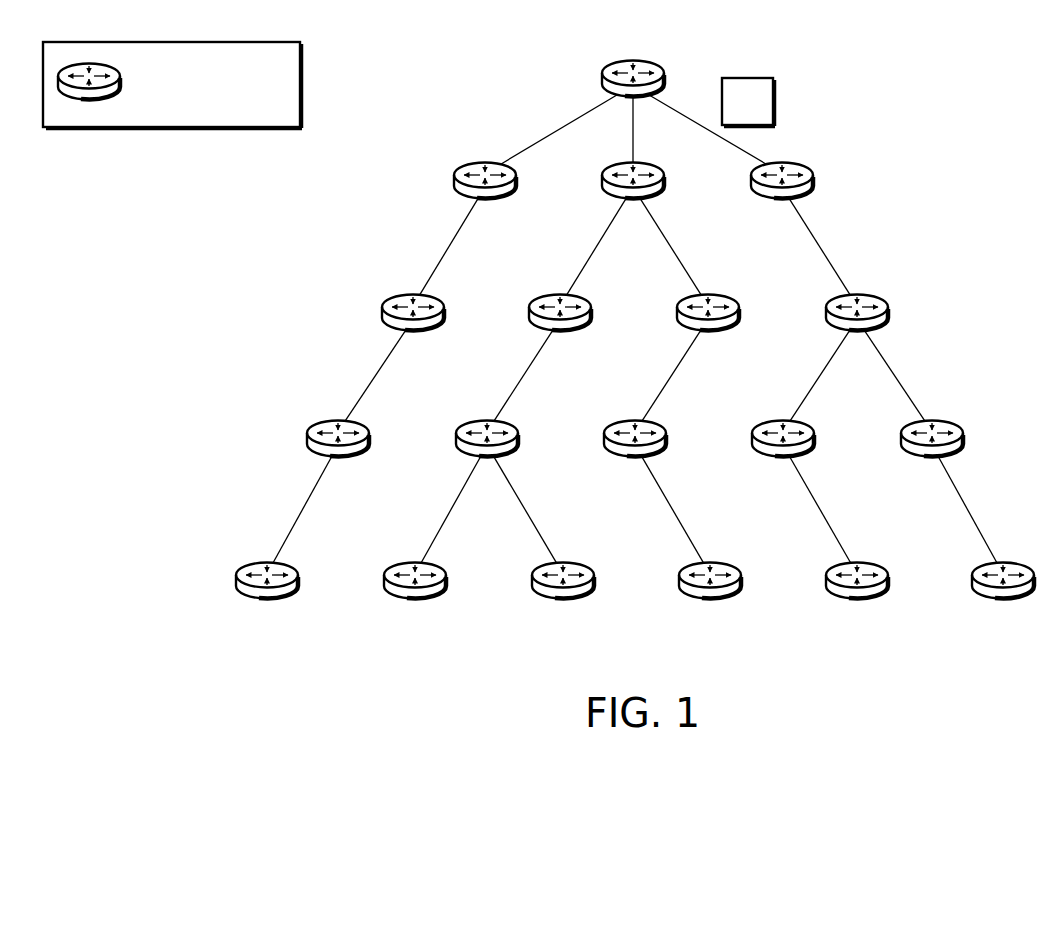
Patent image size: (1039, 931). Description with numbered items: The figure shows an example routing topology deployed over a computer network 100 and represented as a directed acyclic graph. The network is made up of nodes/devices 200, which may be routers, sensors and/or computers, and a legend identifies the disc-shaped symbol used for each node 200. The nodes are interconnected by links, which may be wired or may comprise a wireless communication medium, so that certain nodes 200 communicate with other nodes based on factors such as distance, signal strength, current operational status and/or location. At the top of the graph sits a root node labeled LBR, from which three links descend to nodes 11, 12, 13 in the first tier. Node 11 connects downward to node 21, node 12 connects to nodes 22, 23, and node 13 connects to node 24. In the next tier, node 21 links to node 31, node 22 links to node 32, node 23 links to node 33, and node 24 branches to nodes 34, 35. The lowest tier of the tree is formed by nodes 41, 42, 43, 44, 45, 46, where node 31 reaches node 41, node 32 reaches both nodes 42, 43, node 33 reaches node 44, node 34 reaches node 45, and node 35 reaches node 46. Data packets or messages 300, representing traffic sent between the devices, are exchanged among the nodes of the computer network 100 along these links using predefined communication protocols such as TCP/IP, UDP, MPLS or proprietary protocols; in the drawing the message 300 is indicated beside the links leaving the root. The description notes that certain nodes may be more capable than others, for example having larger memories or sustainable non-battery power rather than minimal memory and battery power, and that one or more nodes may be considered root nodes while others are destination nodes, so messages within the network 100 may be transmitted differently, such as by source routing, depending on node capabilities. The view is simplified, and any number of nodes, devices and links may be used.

The computer network 100 is at (876, 81).
The nodes/devices 200 is at (172, 85).
The data packets or messages 300 is at (698, 79).
The node 11 is at (485, 198).
The node 12 is at (650, 186).
The node 13 is at (782, 199).
The node 21 is at (413, 333).
The node 22 is at (560, 333).
The node 23 is at (708, 333).
The node 24 is at (857, 333).
The node 31 is at (338, 458).
The node 32 is at (487, 458).
The node 33 is at (635, 458).
The node 34 is at (783, 458).
The node 35 is at (932, 458).
The node 41 is at (267, 601).
The node 42 is at (415, 601).
The node 43 is at (563, 601).
The node 44 is at (710, 601).
The node 45 is at (857, 601).
The node 46 is at (1003, 601).